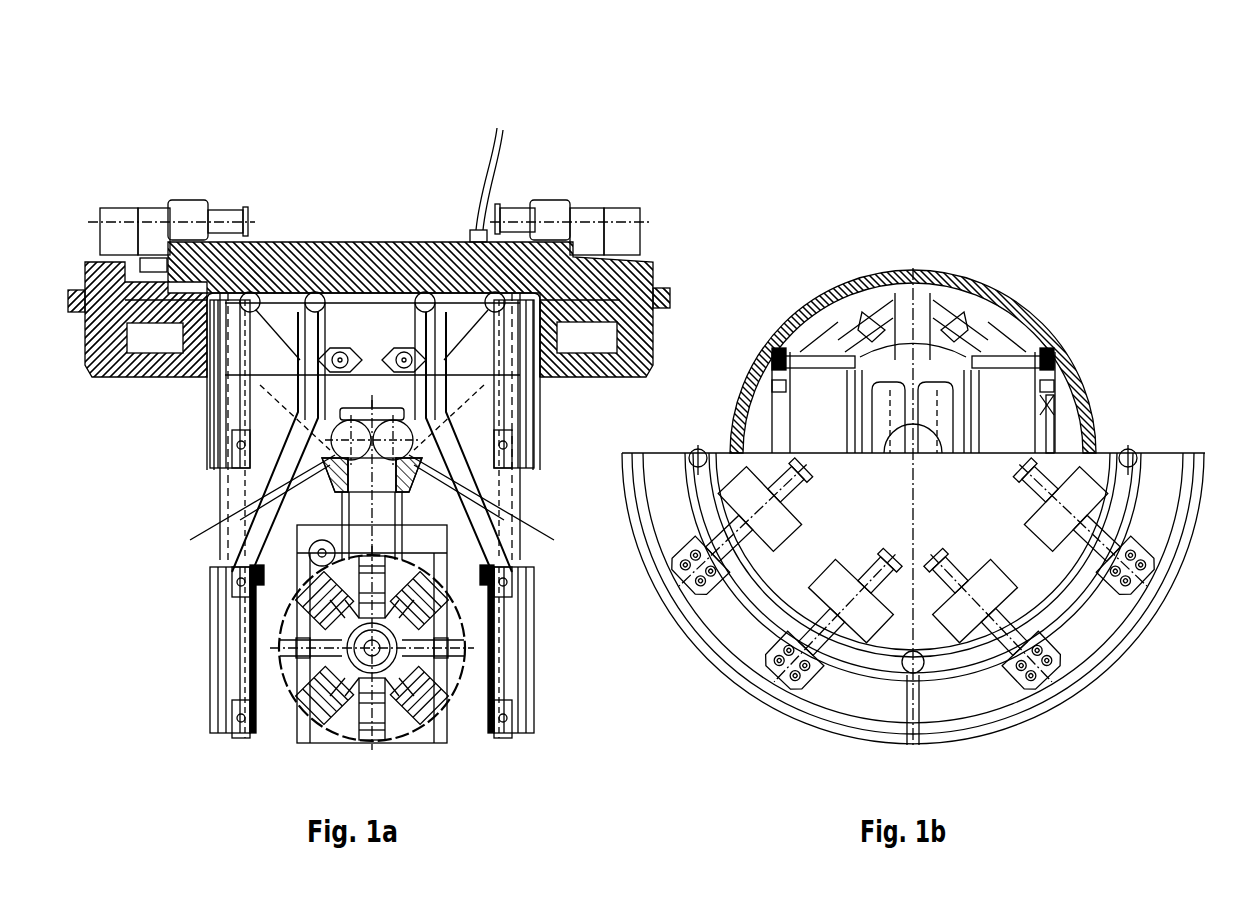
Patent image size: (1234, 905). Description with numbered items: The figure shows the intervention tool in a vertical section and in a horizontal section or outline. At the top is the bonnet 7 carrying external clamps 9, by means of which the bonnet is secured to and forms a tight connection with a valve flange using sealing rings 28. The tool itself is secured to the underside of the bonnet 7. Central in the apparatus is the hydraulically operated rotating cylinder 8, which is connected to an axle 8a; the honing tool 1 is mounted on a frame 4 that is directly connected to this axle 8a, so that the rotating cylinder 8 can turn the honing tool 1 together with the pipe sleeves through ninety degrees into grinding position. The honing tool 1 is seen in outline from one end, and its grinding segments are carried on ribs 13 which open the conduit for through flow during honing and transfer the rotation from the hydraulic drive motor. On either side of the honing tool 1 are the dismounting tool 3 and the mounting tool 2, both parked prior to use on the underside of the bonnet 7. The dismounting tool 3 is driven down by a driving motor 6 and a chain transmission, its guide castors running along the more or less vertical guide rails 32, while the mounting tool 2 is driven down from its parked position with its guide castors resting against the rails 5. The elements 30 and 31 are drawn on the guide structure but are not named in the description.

In FIG. 1A, the honing tool 1 is at (455, 700).
In FIG. 1B, the honing tool 1 is at (890, 268).
In FIG. 1A, the mounting tool 2 is at (222, 655).
In FIG. 1A, the dismounting tool 3 is at (530, 690).
In FIG. 1A, the frame 4 is at (505, 575).
In FIG. 1A, the guide rails 5 is at (250, 525).
In FIG. 1B, the guide rails 5 is at (983, 350).
In FIG. 1A, the driving motor 6 is at (340, 350).
In FIG. 1A, the bonnet 7 is at (290, 256).
In FIG. 1A, the rotating cylinder 8 is at (375, 420).
In FIG. 1A, the axle 8a is at (387, 500).
In FIG. 1A, the clamps 9 is at (652, 270).
In FIG. 1A, the ribs 13 is at (352, 705).
In FIG. 1A, the sealing rings 28 is at (195, 371).
In FIG. 1A, the upper guide 30 is at (215, 418).
In FIG. 1A, the upper guide right 31 is at (470, 445).
In FIG. 1A, the guide rails 32 is at (470, 512).
In FIG. 1B, the guide rails 32 is at (1045, 352).